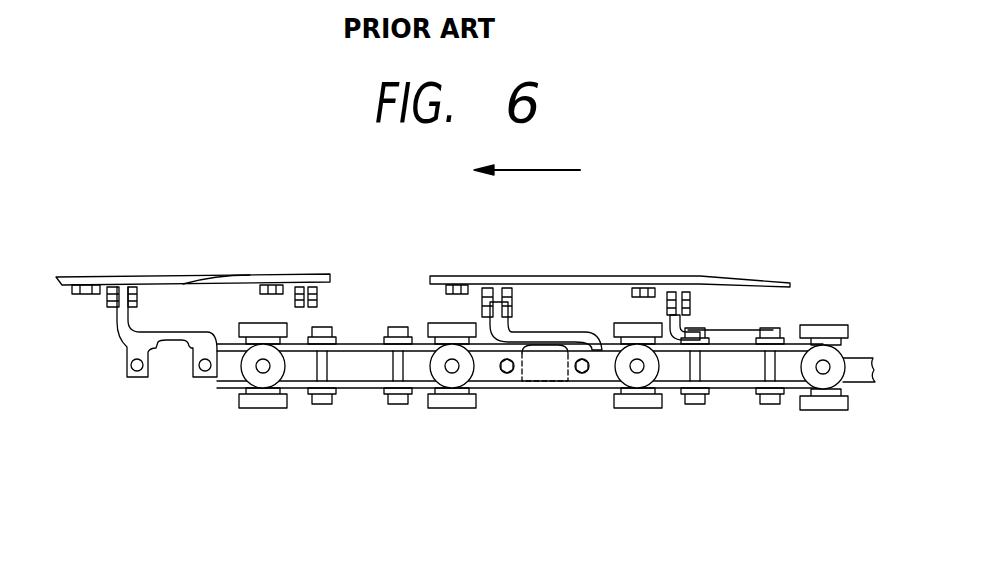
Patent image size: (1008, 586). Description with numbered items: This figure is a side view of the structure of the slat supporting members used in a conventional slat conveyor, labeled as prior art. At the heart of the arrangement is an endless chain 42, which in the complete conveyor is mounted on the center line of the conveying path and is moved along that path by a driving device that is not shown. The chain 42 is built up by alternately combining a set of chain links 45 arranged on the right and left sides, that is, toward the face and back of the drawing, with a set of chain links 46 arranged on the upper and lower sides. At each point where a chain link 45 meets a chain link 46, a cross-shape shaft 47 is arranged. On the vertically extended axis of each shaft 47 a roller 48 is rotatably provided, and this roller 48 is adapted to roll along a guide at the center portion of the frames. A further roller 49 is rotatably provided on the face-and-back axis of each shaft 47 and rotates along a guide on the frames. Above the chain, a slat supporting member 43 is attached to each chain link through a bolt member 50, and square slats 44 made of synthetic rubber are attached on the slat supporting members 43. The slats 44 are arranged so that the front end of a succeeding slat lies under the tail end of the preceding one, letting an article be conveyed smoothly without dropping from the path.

The endless chain 42 is at (465, 370).
The slat supporting member 43 is at (173, 333).
The slat 44 is at (452, 278).
The chain link 45 is at (545, 381).
The chain link 46 is at (355, 344).
The cross-shape shaft 47 is at (263, 366).
The roller 48 is at (258, 322).
The roller 49 is at (250, 355).
The bolt member 50 is at (335, 395).